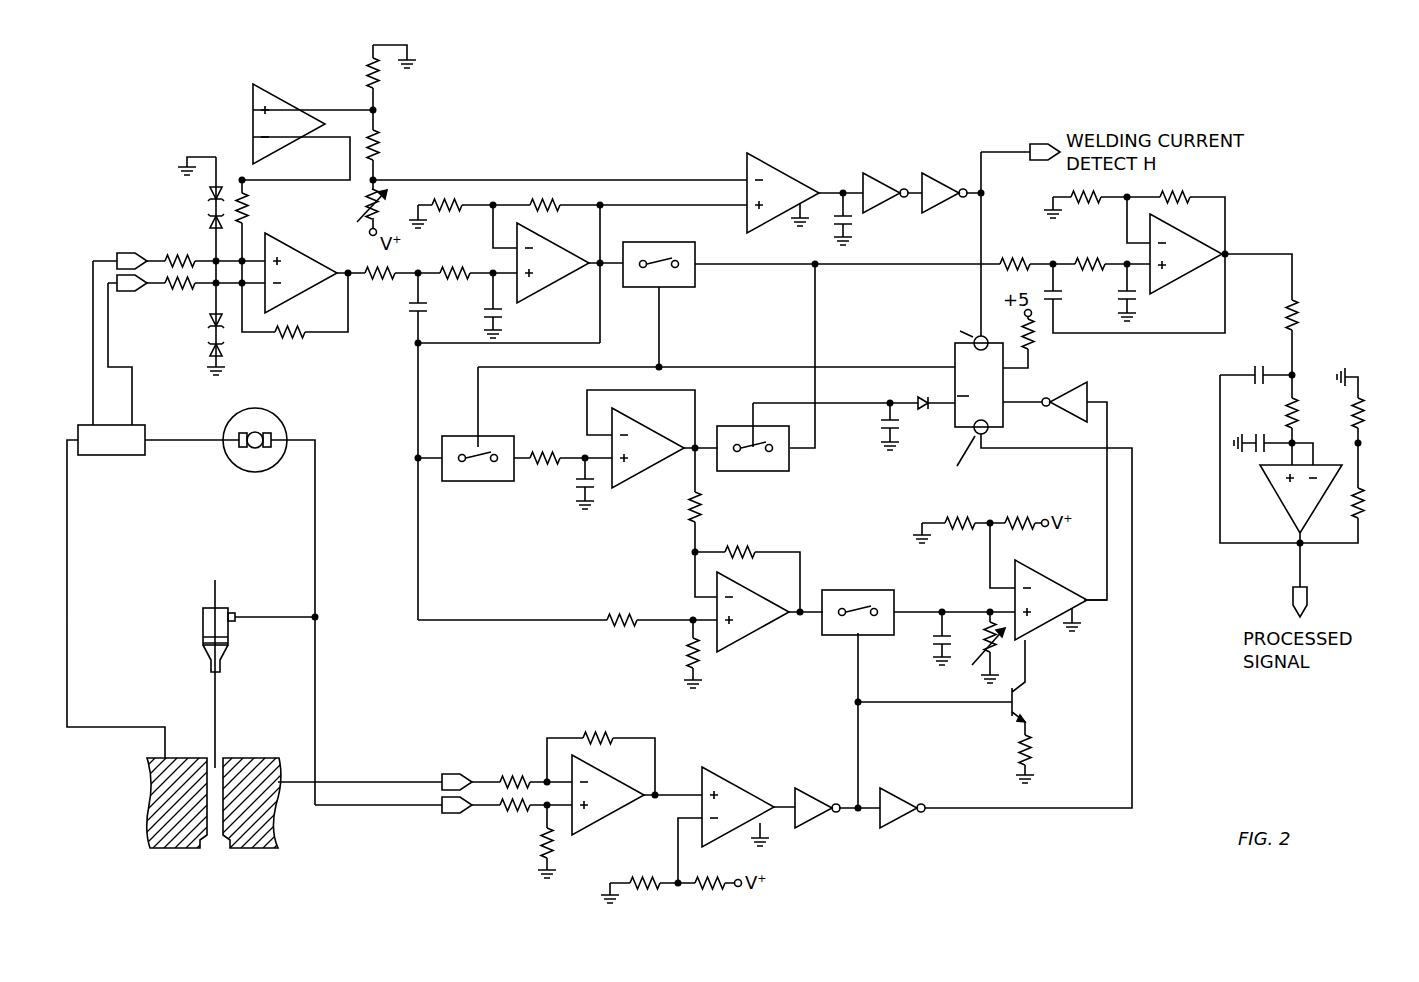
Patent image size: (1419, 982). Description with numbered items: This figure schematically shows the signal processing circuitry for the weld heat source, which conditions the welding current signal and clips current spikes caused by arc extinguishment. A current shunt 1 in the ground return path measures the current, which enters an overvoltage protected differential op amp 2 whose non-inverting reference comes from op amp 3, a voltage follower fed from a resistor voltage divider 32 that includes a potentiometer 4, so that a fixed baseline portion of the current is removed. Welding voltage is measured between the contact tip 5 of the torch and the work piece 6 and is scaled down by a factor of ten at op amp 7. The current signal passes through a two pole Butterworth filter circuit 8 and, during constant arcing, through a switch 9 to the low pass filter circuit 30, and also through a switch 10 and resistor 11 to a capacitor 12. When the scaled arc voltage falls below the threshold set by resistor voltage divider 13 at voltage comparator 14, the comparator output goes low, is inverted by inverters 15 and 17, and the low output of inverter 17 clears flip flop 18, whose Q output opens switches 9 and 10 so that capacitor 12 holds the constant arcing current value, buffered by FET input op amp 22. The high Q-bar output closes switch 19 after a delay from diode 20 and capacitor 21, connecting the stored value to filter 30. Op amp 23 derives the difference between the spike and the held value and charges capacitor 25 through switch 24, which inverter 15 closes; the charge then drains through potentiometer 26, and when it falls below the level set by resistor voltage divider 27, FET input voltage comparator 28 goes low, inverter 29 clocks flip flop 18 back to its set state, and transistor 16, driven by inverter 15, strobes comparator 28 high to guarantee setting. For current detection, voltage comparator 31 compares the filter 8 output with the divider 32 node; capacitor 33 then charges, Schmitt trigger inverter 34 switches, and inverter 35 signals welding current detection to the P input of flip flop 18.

The current shunt 1 is at (108, 456).
The op amp 2 is at (270, 239).
The op amp 3 is at (274, 96).
The potentiometer 4 is at (369, 200).
The contact tip 5 is at (203, 663).
The work piece 6 is at (247, 758).
The op amp 7 is at (580, 830).
The filter circuit 8 is at (522, 205).
The switch 9 is at (680, 287).
The switch 10 is at (490, 482).
The resistor 11 is at (546, 452).
The capacitor 12 is at (576, 483).
The resistor voltage divider 13 is at (680, 886).
The voltage comparator 14 is at (724, 777).
The inverter 15 is at (812, 820).
The transistor 16 is at (1003, 718).
The inverter 17 is at (898, 821).
The flip flop 18 is at (953, 354).
The switch 19 is at (765, 470).
The diode 20 is at (918, 401).
The capacitor 21 is at (881, 426).
The op amp 22 is at (622, 480).
The op amp 23 is at (728, 648).
The switch 24 is at (860, 592).
The capacitor 25 is at (933, 645).
The potentiometer 26 is at (982, 672).
The resistor voltage divider 27 is at (990, 520).
The voltage comparator 28 is at (1059, 590).
The inverter 29 is at (1065, 394).
The low pass filter circuit 30 is at (1272, 255).
The voltage comparator 31 is at (793, 177).
The resistor voltage divider 32 is at (376, 122).
The capacitor 33 is at (850, 223).
The Schmitt trigger inverter 34 is at (875, 183).
The inverter 35 is at (933, 183).